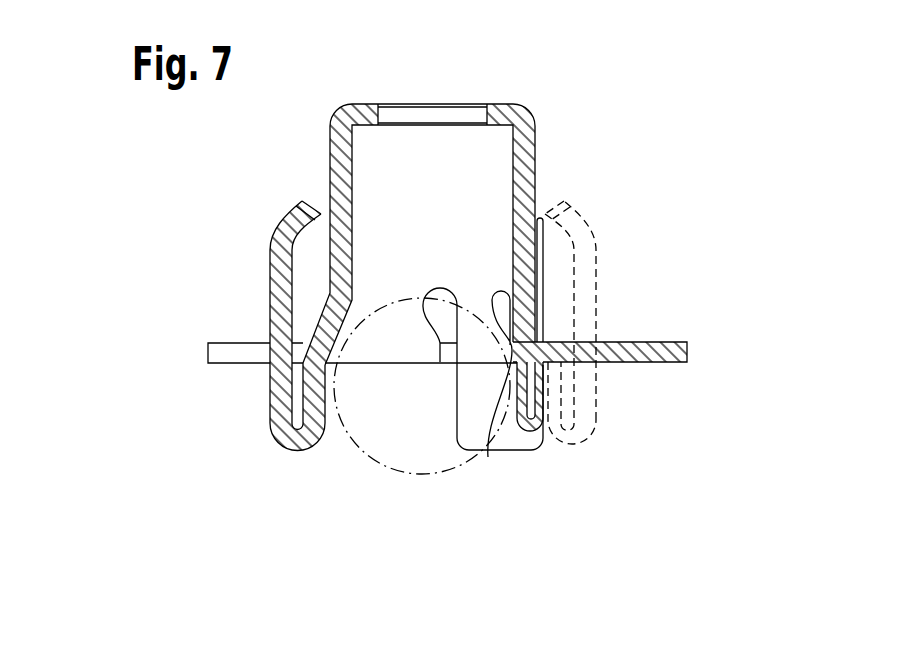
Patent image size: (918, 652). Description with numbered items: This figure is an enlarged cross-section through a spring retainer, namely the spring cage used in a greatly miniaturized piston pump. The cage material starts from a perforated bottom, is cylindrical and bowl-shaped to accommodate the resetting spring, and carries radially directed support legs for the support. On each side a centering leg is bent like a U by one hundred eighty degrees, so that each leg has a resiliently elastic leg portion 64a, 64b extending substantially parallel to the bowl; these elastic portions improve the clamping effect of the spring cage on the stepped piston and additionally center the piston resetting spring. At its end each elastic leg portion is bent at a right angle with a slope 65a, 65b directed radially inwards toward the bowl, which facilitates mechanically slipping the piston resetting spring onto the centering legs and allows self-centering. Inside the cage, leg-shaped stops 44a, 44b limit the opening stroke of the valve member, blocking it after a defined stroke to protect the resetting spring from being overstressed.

The resiliently elastic leg portion 64a is at (277, 275).
The resiliently elastic leg portion 64b is at (587, 275).
The slope 65a is at (302, 212).
The slope 65b is at (563, 212).
The means limiting an opening stroke 44a is at (377, 350).
The means limiting an opening stroke 44b is at (488, 457).